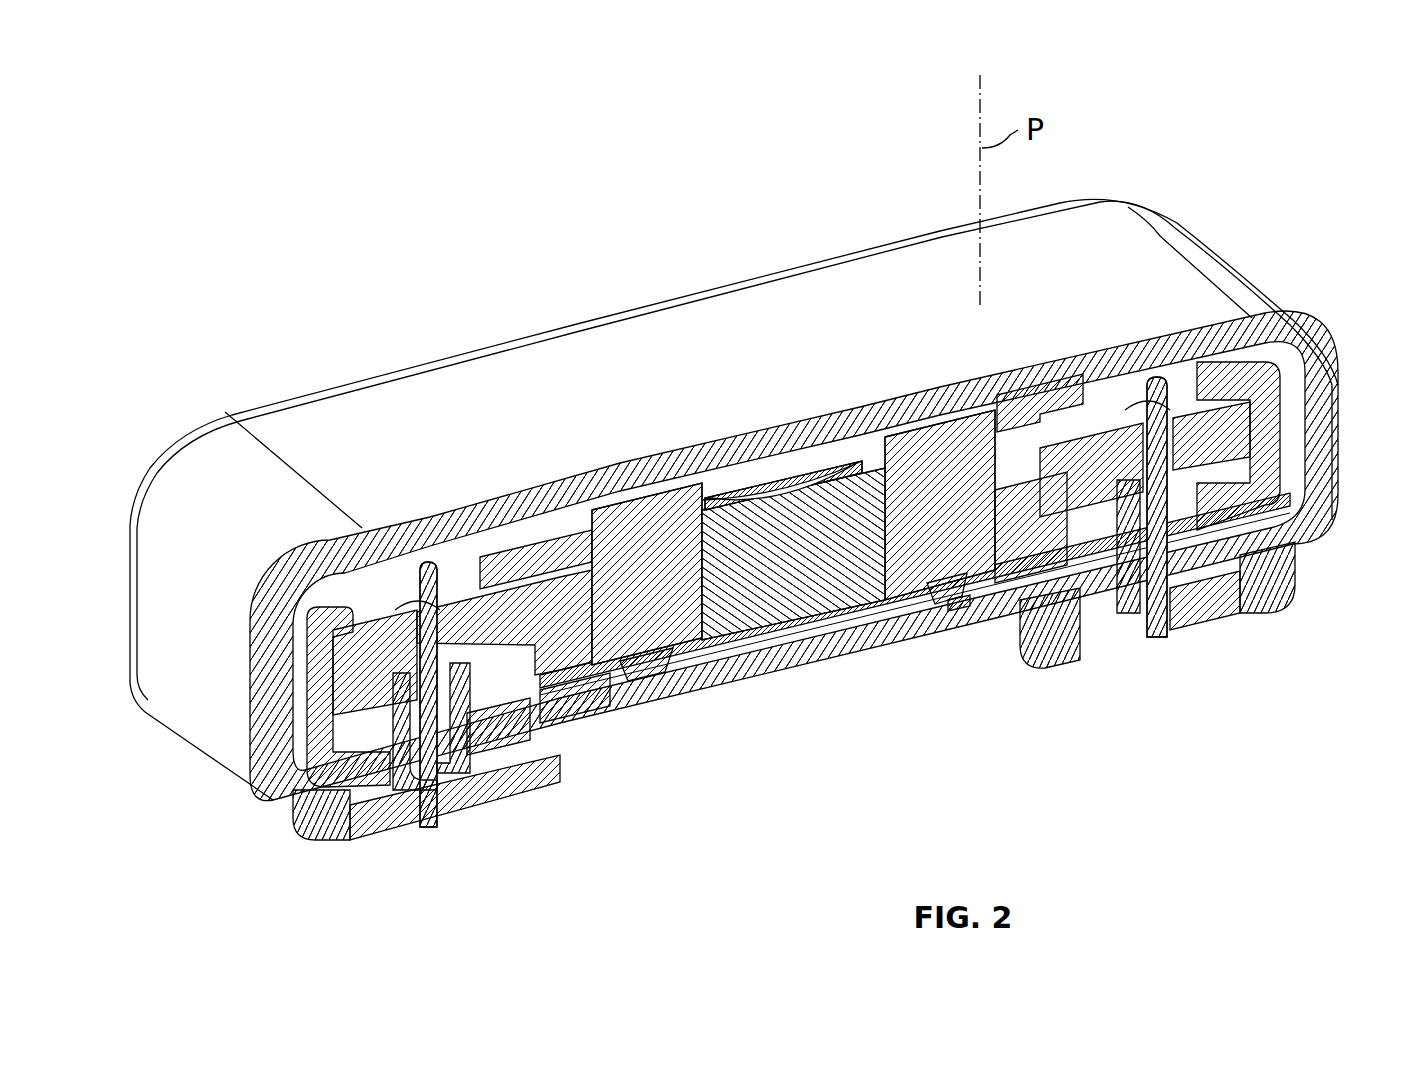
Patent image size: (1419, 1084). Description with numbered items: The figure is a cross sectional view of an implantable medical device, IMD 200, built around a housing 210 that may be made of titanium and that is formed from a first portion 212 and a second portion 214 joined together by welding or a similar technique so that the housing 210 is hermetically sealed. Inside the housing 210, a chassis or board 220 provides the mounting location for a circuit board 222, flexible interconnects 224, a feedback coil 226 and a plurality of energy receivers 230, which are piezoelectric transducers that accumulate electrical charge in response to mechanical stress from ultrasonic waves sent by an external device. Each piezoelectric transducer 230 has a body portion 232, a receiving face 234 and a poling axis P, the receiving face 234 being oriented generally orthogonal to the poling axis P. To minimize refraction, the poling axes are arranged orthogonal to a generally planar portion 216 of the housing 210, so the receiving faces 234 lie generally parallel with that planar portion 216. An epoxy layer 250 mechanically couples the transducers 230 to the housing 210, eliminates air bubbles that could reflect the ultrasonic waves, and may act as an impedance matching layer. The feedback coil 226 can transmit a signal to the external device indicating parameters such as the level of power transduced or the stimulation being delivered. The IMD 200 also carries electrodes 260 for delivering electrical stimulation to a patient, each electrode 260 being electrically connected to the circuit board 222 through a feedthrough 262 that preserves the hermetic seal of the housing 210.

The IMD 200 is at (155, 270).
The housing 210 is at (1260, 280).
The first portion 212 is at (148, 474).
The second portion 214 is at (158, 702).
The generally planar portion 216 is at (580, 413).
The chassis or board 220 is at (262, 790).
The circuit board 222 is at (382, 590).
The flexible interconnects 224 is at (775, 638).
The feedback coil 226 is at (577, 692).
The energy receiver 230 is at (676, 652).
The body portion 232 is at (958, 605).
The receiving face 234 is at (932, 425).
The epoxy layer 250 is at (1020, 403).
The electrode 260 is at (380, 830).
The feedthrough 262 is at (458, 838).